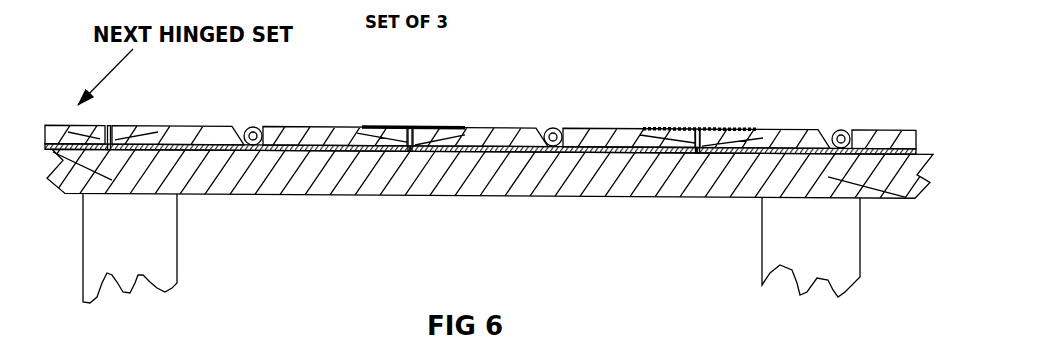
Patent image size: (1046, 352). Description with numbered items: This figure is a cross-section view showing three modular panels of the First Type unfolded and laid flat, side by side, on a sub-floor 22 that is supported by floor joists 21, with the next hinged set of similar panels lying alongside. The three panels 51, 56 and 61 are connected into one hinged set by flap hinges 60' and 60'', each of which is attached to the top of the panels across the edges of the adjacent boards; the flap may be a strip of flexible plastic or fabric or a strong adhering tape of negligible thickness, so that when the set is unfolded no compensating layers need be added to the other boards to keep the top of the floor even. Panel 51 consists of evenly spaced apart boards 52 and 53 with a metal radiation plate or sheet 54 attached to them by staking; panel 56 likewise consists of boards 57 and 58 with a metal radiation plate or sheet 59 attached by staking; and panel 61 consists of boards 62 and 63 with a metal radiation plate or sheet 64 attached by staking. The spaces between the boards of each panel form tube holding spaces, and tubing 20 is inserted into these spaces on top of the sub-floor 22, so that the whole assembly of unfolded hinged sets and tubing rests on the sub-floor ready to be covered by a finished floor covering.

The tubing 20 is at (252, 127).
The floor joists 21 is at (177, 260).
The sub-floor 22 is at (388, 197).
The modular panel 51 is at (268, 102).
The board 52 is at (207, 147).
The board 53 is at (327, 127).
The metal radiation plate or sheet 54 is at (200, 148).
The modular panel 56 is at (582, 98).
The board 57 is at (488, 128).
The board 58 is at (606, 128).
The metal radiation plate or sheet 59 is at (506, 148).
The flap hinge 60' is at (413, 107).
The flap hinge 60'' is at (700, 107).
The modular panel 61 is at (820, 115).
The board 62 is at (787, 128).
The board 63 is at (882, 130).
The metal radiation plate or sheet 64 is at (827, 152).